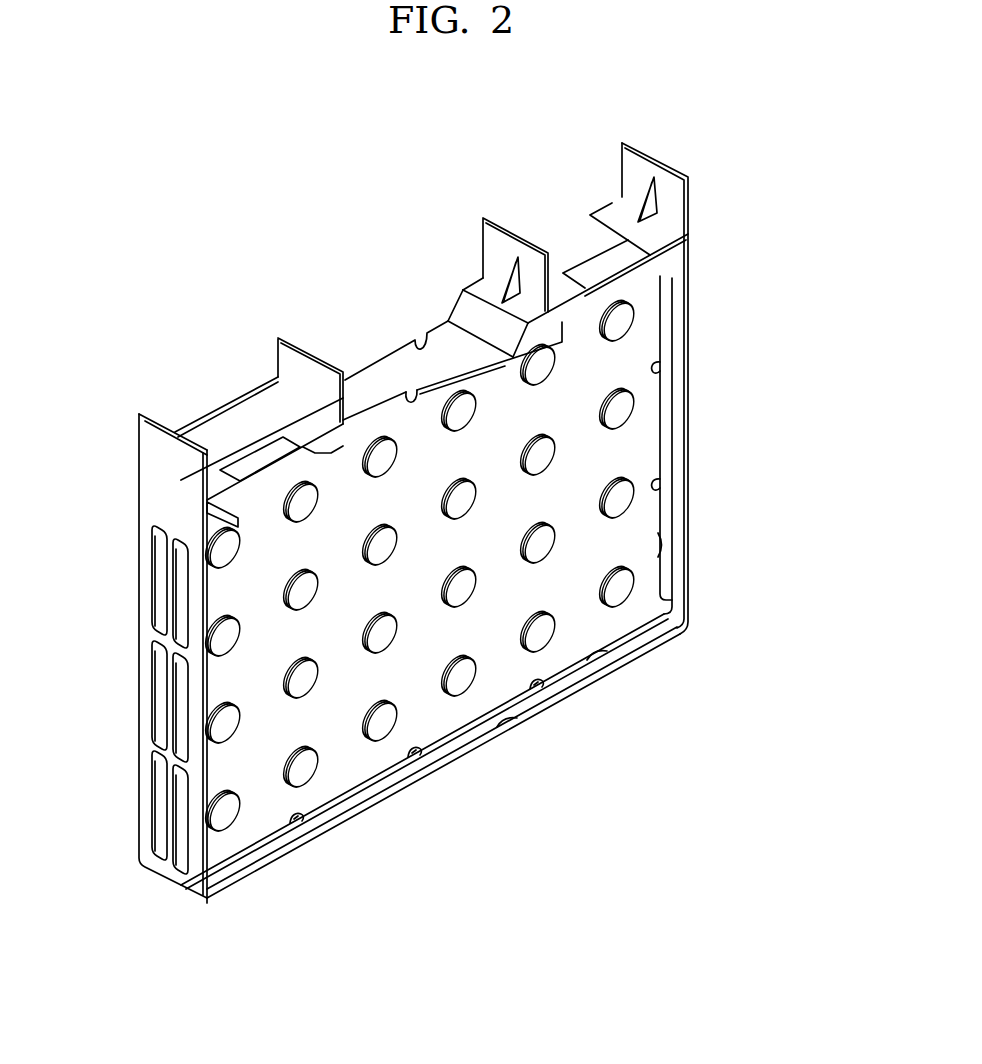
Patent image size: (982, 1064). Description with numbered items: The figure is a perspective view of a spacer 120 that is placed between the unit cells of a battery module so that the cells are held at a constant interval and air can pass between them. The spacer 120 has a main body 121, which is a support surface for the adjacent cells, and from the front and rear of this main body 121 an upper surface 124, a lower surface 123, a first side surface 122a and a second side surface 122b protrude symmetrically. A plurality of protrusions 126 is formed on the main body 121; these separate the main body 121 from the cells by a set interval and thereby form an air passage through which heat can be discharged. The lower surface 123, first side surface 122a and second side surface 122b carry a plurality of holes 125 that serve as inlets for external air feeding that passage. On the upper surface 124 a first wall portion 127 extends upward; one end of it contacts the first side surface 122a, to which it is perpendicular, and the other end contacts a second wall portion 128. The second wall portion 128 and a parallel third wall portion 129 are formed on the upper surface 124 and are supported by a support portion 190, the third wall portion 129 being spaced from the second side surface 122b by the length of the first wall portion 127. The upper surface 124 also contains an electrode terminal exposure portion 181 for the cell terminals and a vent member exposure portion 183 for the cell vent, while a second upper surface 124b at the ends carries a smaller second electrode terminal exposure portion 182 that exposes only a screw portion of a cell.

The spacer 120 is at (730, 181).
The main body 121 is at (632, 352).
The first side surface 122a is at (145, 633).
The second side surface 122b is at (688, 438).
The lower surface 123 is at (525, 720).
The upper surface 124 is at (413, 375).
The second upper surface 124b is at (313, 427).
The holes 125 is at (663, 557).
The protrusions 126 is at (620, 507).
The first wall portion 127 is at (193, 417).
The second wall portion 128 is at (282, 338).
The third wall portion 129 is at (510, 227).
The electrode terminal exposure portion 181 is at (256, 503).
The second electrode terminal exposure portion 182 is at (250, 450).
The vent member exposure portion 183 is at (425, 415).
The support portion 190 is at (488, 254).